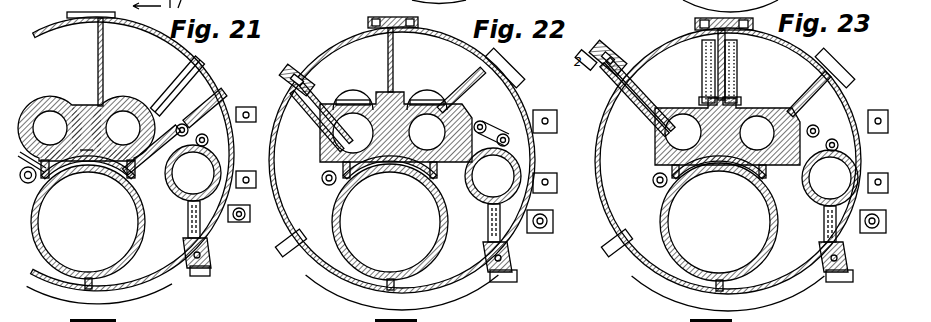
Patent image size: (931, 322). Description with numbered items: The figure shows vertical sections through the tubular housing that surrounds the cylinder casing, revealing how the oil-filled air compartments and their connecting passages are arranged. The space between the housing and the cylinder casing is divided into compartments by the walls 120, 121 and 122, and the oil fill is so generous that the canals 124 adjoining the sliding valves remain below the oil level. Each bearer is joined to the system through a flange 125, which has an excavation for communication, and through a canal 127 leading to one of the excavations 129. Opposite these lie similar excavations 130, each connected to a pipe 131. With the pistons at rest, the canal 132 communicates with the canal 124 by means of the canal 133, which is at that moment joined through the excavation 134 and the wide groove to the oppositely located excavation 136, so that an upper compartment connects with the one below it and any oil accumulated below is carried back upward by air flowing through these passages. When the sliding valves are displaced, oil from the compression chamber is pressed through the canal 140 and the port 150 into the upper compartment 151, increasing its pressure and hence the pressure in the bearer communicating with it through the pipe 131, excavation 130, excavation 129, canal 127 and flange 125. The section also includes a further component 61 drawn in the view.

In FIG. 21, the port 150 is at (34, 108).
In FIG. 21, the mounting plate 61 is at (168, 116).
In FIG. 21, the canal 140 is at (97, 168).
In FIG. 22, the upper compartment 151 is at (302, 62).
In FIG. 22, the canal 133 is at (323, 103).
In FIG. 22, the excavation 134 is at (350, 100).
In FIG. 22, the wall 121 is at (395, 46).
In FIG. 22, the canal 124 is at (394, 98).
In FIG. 22, the wall 120 is at (317, 166).
In FIG. 22, the excavation 136 is at (373, 166).
In FIG. 22, the wall 122 is at (447, 172).
In FIG. 22, the canal 132 is at (510, 250).
In FIG. 23, the flange 125 is at (623, 57).
In FIG. 23, the canal 127 is at (627, 92).
In FIG. 23, the pipe 131 is at (738, 54).
In FIG. 23, the excavation 130 is at (745, 106).
In FIG. 23, the excavation 129 is at (655, 152).